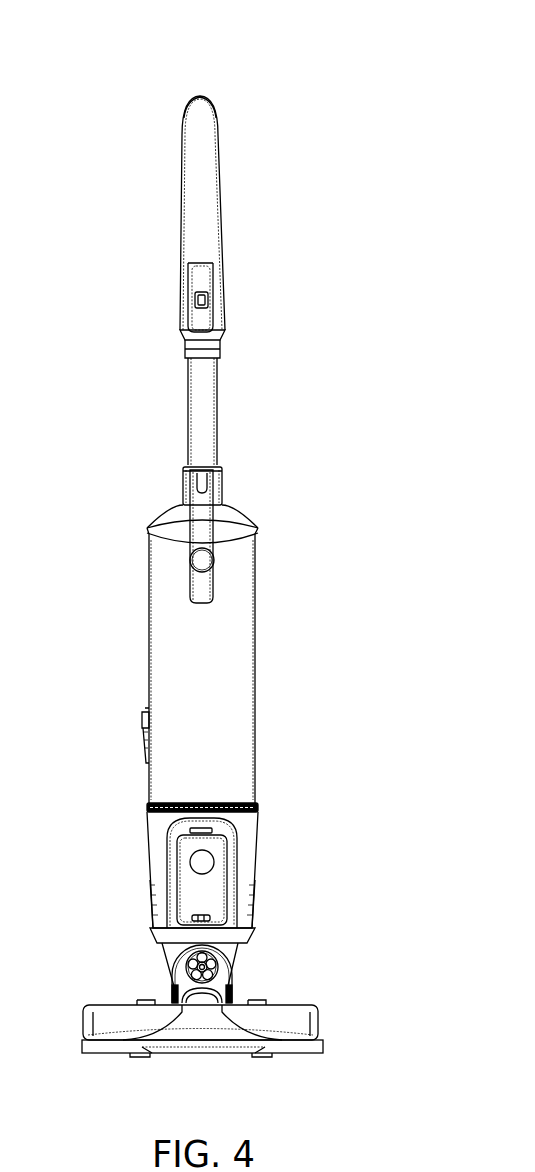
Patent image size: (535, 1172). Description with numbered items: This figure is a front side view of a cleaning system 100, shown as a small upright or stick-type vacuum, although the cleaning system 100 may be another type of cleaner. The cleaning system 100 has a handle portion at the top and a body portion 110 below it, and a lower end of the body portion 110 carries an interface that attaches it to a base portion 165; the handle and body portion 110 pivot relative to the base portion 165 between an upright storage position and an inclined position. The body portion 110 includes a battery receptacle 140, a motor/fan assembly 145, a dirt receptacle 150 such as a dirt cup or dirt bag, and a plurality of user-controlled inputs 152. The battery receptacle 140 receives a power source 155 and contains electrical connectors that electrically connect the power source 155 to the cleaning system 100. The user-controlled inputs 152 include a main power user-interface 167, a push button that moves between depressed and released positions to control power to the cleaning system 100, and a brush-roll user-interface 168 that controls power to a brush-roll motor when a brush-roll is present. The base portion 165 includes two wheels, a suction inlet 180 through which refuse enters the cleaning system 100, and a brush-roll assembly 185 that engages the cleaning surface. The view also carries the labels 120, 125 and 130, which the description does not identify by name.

The cleaning system 100 is at (200, 75).
The body portion 110 is at (132, 815).
The handle 120 is at (225, 165).
The grip portion 125 is at (235, 318).
The handle end 130 is at (208, 97).
The battery receptacle 140 is at (263, 815).
The motor/fan assembly 145 is at (247, 572).
The dirt receptacle 150 is at (158, 699).
The plurality of user-controlled inputs 152 is at (242, 493).
The power source 155 is at (212, 878).
The base portion 165 is at (147, 968).
The main power user-interface 167 is at (183, 482).
The brush-roll user-interface 168 is at (202, 470).
The suction inlet 180 is at (202, 1062).
The brush-roll assembly 185 is at (303, 1065).